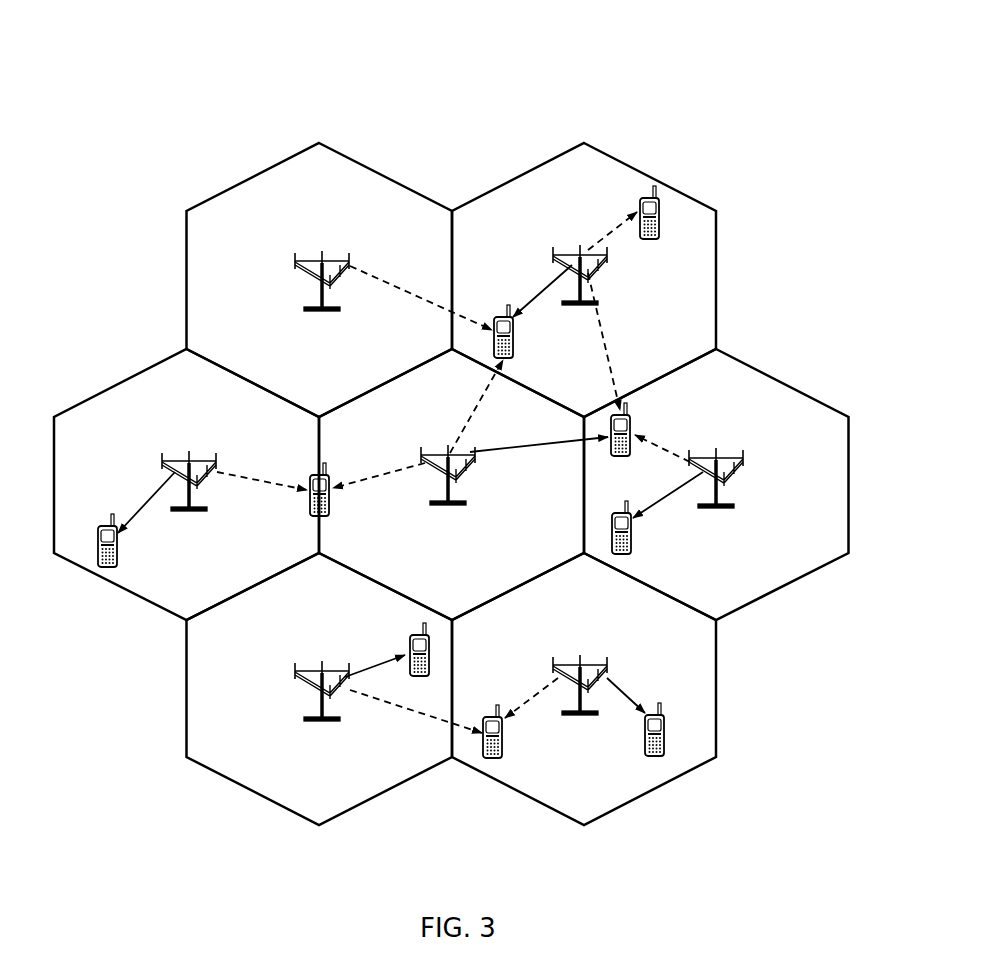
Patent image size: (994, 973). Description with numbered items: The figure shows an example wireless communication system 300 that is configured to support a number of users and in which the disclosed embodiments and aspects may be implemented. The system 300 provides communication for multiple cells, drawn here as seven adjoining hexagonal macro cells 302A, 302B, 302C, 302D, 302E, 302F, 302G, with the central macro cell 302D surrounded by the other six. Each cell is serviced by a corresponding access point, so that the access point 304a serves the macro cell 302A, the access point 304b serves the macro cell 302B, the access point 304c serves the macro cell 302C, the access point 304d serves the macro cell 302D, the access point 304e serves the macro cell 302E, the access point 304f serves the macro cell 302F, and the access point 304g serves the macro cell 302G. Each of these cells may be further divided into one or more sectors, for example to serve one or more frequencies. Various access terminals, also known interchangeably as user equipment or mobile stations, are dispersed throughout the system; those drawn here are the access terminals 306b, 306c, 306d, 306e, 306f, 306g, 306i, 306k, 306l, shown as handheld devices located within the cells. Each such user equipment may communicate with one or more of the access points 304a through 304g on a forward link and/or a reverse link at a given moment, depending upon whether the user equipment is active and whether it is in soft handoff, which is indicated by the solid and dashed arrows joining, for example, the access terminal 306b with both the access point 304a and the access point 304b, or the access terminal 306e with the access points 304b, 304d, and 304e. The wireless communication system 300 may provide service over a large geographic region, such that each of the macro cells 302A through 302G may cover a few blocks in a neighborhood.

The wireless communication system 300 is at (726, 76).
The macro cell 302A is at (240, 187).
The macro cell 302B is at (668, 187).
The macro cell 302C is at (122, 381).
The macro cell 302D is at (473, 391).
The macro cell 302E is at (779, 381).
The macro cell 302F is at (219, 774).
The macro cell 302G is at (683, 774).
The access point 304a is at (320, 258).
The access point 304b is at (578, 251).
The access point 304c is at (196, 459).
The access point 304d is at (445, 453).
The access point 304e is at (730, 456).
The access point 304f is at (340, 669).
The access point 304g is at (583, 663).
The access terminal 306b is at (515, 345).
The access terminal 306c is at (117, 563).
The access terminal 306d is at (310, 512).
The access terminal 306e is at (631, 415).
The access terminal 306f is at (418, 630).
The access terminal 306g is at (500, 757).
The access terminal 306i is at (648, 243).
The access terminal 306k is at (631, 548).
The access terminal 306l is at (653, 758).